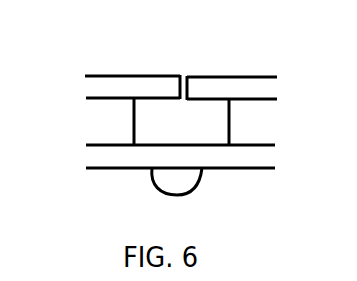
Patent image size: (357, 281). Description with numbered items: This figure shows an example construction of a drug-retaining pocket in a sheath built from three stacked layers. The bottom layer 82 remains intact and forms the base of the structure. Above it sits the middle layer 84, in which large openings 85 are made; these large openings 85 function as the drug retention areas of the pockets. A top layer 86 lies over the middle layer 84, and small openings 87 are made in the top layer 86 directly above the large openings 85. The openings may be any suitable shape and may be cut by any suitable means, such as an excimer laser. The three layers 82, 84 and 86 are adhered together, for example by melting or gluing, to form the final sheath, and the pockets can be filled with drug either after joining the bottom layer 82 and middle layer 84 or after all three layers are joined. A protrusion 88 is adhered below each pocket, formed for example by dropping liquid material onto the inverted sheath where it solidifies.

The bottom layer 82 is at (102, 153).
The middle layer 84 is at (98, 115).
The large openings 85 is at (210, 131).
The top layer 86 is at (97, 83).
The small openings 87 is at (187, 71).
The protrusion 88 is at (185, 182).